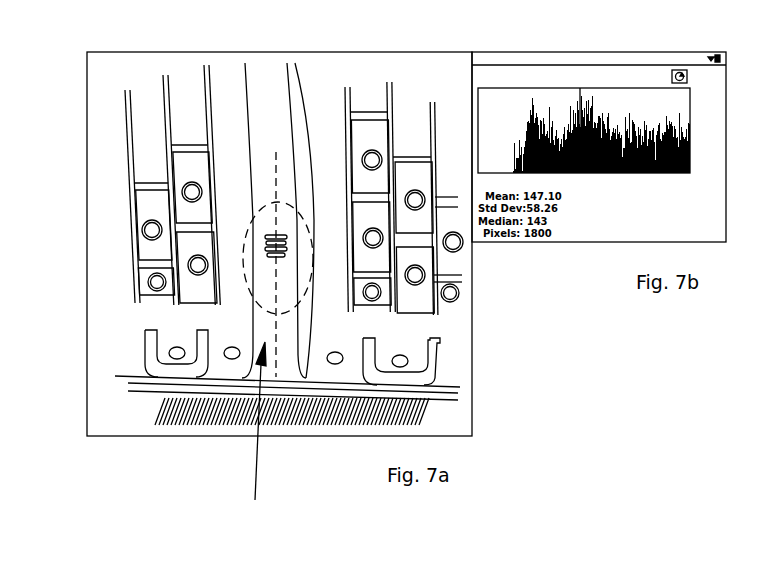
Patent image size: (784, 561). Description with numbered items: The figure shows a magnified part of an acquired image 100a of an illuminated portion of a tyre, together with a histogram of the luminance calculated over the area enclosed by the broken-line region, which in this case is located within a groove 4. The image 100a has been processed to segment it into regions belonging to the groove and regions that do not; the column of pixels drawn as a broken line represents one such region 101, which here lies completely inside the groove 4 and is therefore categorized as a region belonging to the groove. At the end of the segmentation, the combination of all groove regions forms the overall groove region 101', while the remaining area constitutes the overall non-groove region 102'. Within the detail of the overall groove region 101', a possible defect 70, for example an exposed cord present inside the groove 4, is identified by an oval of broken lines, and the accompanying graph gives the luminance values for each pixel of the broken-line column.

The image 100a is at (203, 447).
The groove region 101 is at (283, 318).
The overall groove region 101' is at (291, 189).
The overall non-groove region 102' is at (295, 224).
The defect 70 is at (305, 297).
The groove 4 is at (259, 434).